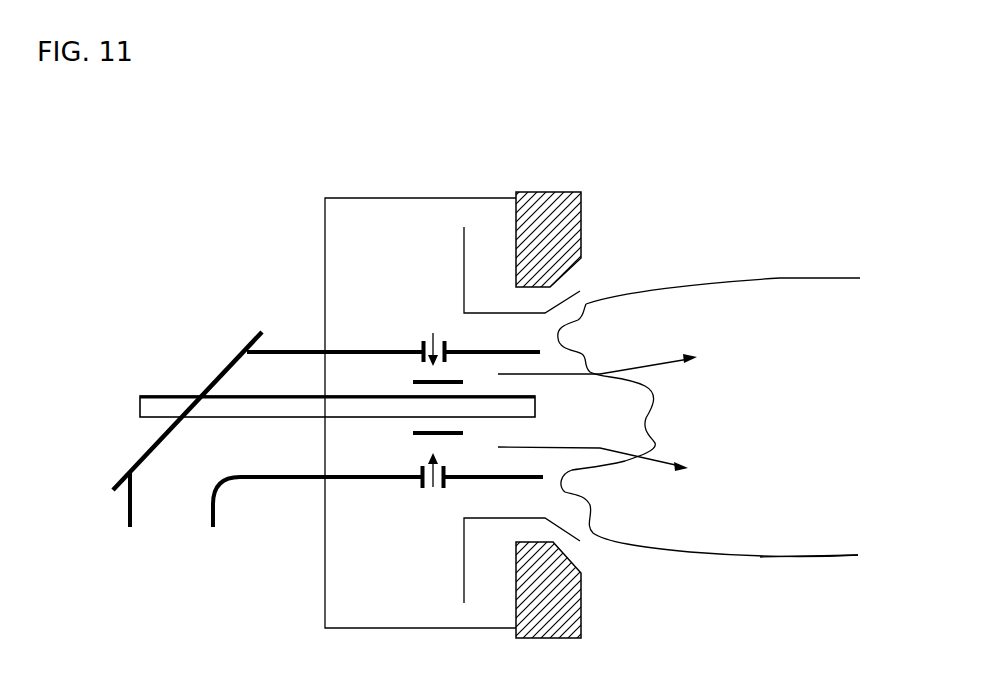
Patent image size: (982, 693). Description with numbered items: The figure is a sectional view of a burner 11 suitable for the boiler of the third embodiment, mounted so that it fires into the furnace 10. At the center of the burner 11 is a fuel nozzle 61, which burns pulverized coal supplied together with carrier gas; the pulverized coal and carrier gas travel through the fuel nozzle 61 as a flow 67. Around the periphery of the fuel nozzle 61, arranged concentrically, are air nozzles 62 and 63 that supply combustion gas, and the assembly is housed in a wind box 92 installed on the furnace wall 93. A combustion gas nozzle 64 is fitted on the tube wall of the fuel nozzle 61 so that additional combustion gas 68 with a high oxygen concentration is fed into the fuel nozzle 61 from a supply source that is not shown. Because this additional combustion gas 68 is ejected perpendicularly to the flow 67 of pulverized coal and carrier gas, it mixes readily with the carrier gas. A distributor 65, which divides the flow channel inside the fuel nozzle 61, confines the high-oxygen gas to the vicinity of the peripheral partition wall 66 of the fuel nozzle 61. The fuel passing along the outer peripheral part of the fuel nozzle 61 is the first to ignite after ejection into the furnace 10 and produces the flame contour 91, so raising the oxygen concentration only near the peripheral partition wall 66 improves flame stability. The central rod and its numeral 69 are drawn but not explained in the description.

The furnace 10 is at (845, 621).
The burner 11 is at (447, 170).
The fuel nozzle 61 is at (321, 461).
The air nozzle 62 is at (518, 513).
The air nozzle 63 is at (505, 548).
The combustion gas nozzle 64 is at (420, 348).
The distributor 65 is at (425, 435).
The peripheral partition wall 66 is at (358, 478).
The flow of pulverized coal and carrier gas 67 is at (667, 362).
The additional combustion gas 68 is at (430, 337).
The lance rod 69 is at (162, 396).
The flame contour 91 is at (800, 278).
The wind box 92 is at (395, 242).
The furnace wall 93 is at (574, 210).